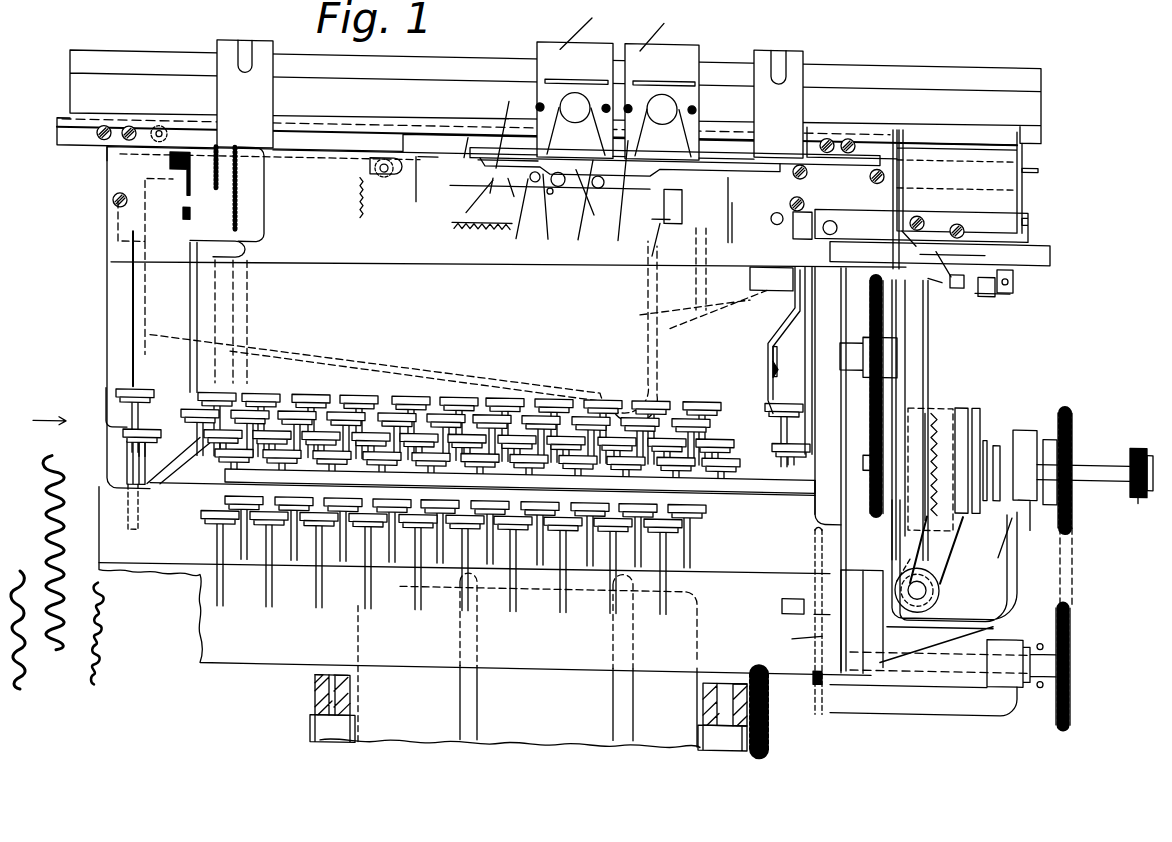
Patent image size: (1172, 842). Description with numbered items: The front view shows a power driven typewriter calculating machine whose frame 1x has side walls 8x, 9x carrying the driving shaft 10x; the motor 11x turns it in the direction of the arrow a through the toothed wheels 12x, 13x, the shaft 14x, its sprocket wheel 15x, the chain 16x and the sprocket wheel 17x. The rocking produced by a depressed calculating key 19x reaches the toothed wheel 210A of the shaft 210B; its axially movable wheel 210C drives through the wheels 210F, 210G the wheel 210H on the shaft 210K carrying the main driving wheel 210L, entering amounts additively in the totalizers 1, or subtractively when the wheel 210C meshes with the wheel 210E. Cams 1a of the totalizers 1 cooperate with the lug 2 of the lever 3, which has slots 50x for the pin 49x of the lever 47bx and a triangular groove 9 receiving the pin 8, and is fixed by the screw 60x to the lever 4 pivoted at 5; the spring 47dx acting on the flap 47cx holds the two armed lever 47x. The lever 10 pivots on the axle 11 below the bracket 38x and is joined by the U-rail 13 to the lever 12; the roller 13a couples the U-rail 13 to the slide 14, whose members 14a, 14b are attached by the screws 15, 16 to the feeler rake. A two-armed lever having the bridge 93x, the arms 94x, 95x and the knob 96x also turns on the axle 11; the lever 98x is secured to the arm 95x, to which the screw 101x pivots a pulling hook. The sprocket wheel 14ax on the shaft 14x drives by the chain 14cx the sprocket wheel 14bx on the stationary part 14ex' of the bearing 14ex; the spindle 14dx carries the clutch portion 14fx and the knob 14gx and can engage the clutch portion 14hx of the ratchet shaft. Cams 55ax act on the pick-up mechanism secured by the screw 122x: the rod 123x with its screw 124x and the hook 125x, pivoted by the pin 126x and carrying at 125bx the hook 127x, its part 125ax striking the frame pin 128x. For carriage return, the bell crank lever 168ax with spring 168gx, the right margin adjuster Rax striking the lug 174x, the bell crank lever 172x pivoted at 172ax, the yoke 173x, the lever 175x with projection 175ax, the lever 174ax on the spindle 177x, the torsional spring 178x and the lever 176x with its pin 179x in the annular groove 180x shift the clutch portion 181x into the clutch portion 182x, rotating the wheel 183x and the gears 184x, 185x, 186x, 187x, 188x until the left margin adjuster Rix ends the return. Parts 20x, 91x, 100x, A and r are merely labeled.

The type bar segment 1 is at (615, 28).
The segment part 1a is at (591, 199).
The frame 1x is at (103, 525).
The lever 2 is at (507, 125).
The pivot 3 is at (488, 194).
The bracket 4 is at (813, 205).
The screw 5 is at (793, 196).
The pin 8 is at (549, 186).
The key lever 8x is at (103, 448).
The pivot pin 9 is at (535, 174).
The bracket 9x is at (838, 512).
The rod 10 is at (806, 300).
The rod 10x is at (808, 570).
The bracket 11 is at (1014, 265).
The rod 11x is at (356, 628).
The nut 12 is at (956, 272).
The gear 12x is at (770, 724).
The rod 13 is at (832, 300).
The arm 13a is at (946, 270).
The bracket 13x is at (765, 612).
The plate 14 is at (847, 227).
The plate part 14a is at (899, 218).
The plate part 14b is at (1022, 160).
The lever 14x is at (804, 636).
The gear 14ax is at (1071, 636).
The gear 14bx is at (1075, 412).
The shaft 14cx is at (1074, 560).
The knob 14dx is at (1095, 452).
The lever 14ex is at (986, 540).
The lever 14ex' is at (1043, 464).
The disc 14fx is at (997, 430).
The knob 14gx is at (1136, 479).
The disc 14hx is at (985, 425).
The rod 15 is at (892, 170).
The pin 15x is at (824, 690).
The plate 16 is at (1038, 149).
The rod 16x is at (814, 604).
The rod 17x is at (812, 525).
The key 19x is at (272, 513).
The key 20x is at (312, 583).
The plate 38x is at (1050, 237).
The roller 47x is at (384, 172).
The lever 47bx is at (428, 180).
The housing 47cx is at (370, 158).
The spring 47dx is at (358, 193).
The link 49x is at (510, 197).
The bar 50x is at (508, 148).
The type bar guide 55ax is at (651, 80).
The screw 60x is at (802, 151).
The key 91x is at (774, 392).
The rod 93x is at (910, 420).
The arm 94x is at (1000, 278).
The bracket 95x is at (781, 303).
The pawl 96x is at (986, 280).
The key 98x is at (811, 434).
The stop 100x is at (778, 345).
The pawl 101x is at (772, 357).
The screw 122x is at (879, 155).
The lever 123x is at (685, 208).
The lever 124x is at (512, 217).
The lever 125x is at (579, 207).
The lever arm 125ax is at (633, 197).
The lever arm 125bx is at (663, 244).
The pin 126x is at (602, 178).
The roller 127x is at (563, 178).
The link 128x is at (542, 215).
The spring 168ax is at (454, 208).
The spring 168gx is at (478, 239).
The rod 172x is at (707, 269).
The pin 172ax is at (772, 210).
The roller 173x is at (838, 216).
The bar 174x is at (434, 141).
The ratchet 174ax is at (937, 400).
The screw 175x is at (938, 232).
The plate 175ax is at (774, 274).
The lever 176x is at (945, 530).
The pulley 177x is at (920, 576).
The lever 178x is at (935, 566).
The plate 179x is at (961, 395).
The plate 180x is at (977, 392).
The ratchet housing 181x is at (925, 395).
The nut 182x is at (900, 402).
The rack 183x is at (875, 498).
The rod 184x is at (899, 370).
The screw 185x is at (954, 206).
The screw 186x is at (912, 200).
The rod 187x is at (734, 228).
The rod 188x is at (728, 160).
The lever 210A is at (665, 234).
The plate 210B is at (508, 254).
The block 210C is at (250, 240).
The rack 210E is at (236, 150).
The housing 210F is at (262, 180).
The bracket 210G is at (184, 168).
The rack 210H is at (217, 150).
The rod 210K is at (298, 155).
The lever 210L is at (474, 126).
The direction arrow A is at (49, 412).
The bracket Rix is at (245, 55).
The bracket Rax is at (781, 58).
The plate a is at (1005, 212).
The carriage rail r is at (1035, 94).